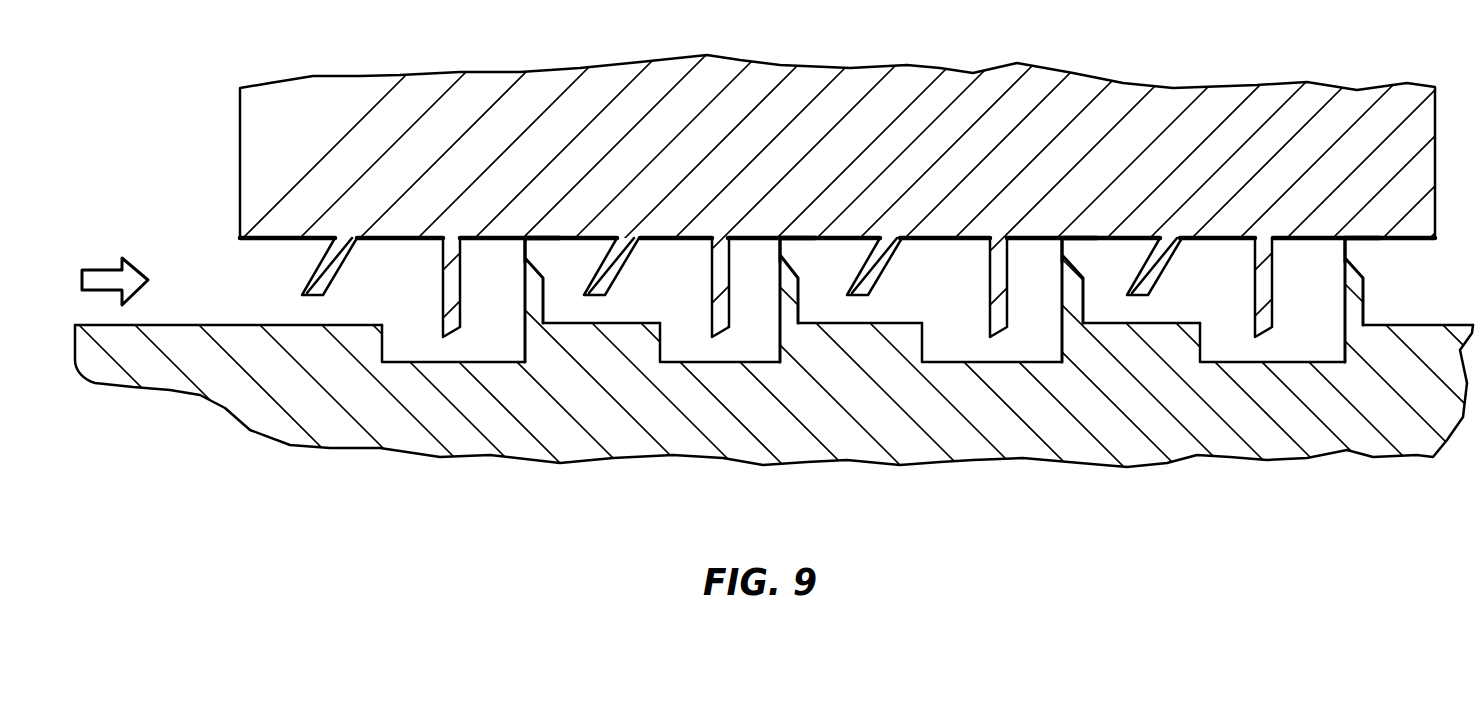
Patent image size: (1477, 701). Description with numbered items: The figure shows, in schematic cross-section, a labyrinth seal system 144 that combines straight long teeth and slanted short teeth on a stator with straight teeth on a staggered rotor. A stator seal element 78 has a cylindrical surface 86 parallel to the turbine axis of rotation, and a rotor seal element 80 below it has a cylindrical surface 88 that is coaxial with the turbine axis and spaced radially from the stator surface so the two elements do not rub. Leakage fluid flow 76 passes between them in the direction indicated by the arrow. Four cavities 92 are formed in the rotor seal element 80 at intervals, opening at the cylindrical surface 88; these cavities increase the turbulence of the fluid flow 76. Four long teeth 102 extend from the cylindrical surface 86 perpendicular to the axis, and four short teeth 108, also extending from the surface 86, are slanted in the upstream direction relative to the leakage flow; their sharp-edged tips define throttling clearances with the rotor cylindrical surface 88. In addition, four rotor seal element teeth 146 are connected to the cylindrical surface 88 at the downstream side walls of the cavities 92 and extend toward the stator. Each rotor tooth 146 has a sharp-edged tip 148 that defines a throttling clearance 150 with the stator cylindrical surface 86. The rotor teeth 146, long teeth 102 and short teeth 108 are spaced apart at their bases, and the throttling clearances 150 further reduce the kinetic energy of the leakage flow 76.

The seal system 144 is at (180, 65).
The stator seal element 78 is at (240, 162).
The rotor seal element 80 is at (193, 383).
The leakage fluid flow 76 is at (102, 282).
The cylindrical surface 86 is at (393, 239).
The cylindrical surface 88 is at (247, 323).
The cavity 92 is at (498, 350).
The long tooth 102 is at (445, 285).
The short tooth 108 is at (312, 280).
The rotor seal element tooth 146 is at (527, 293).
The sharp-edged tip 148 is at (535, 246).
The throttling clearance 150 is at (530, 250).